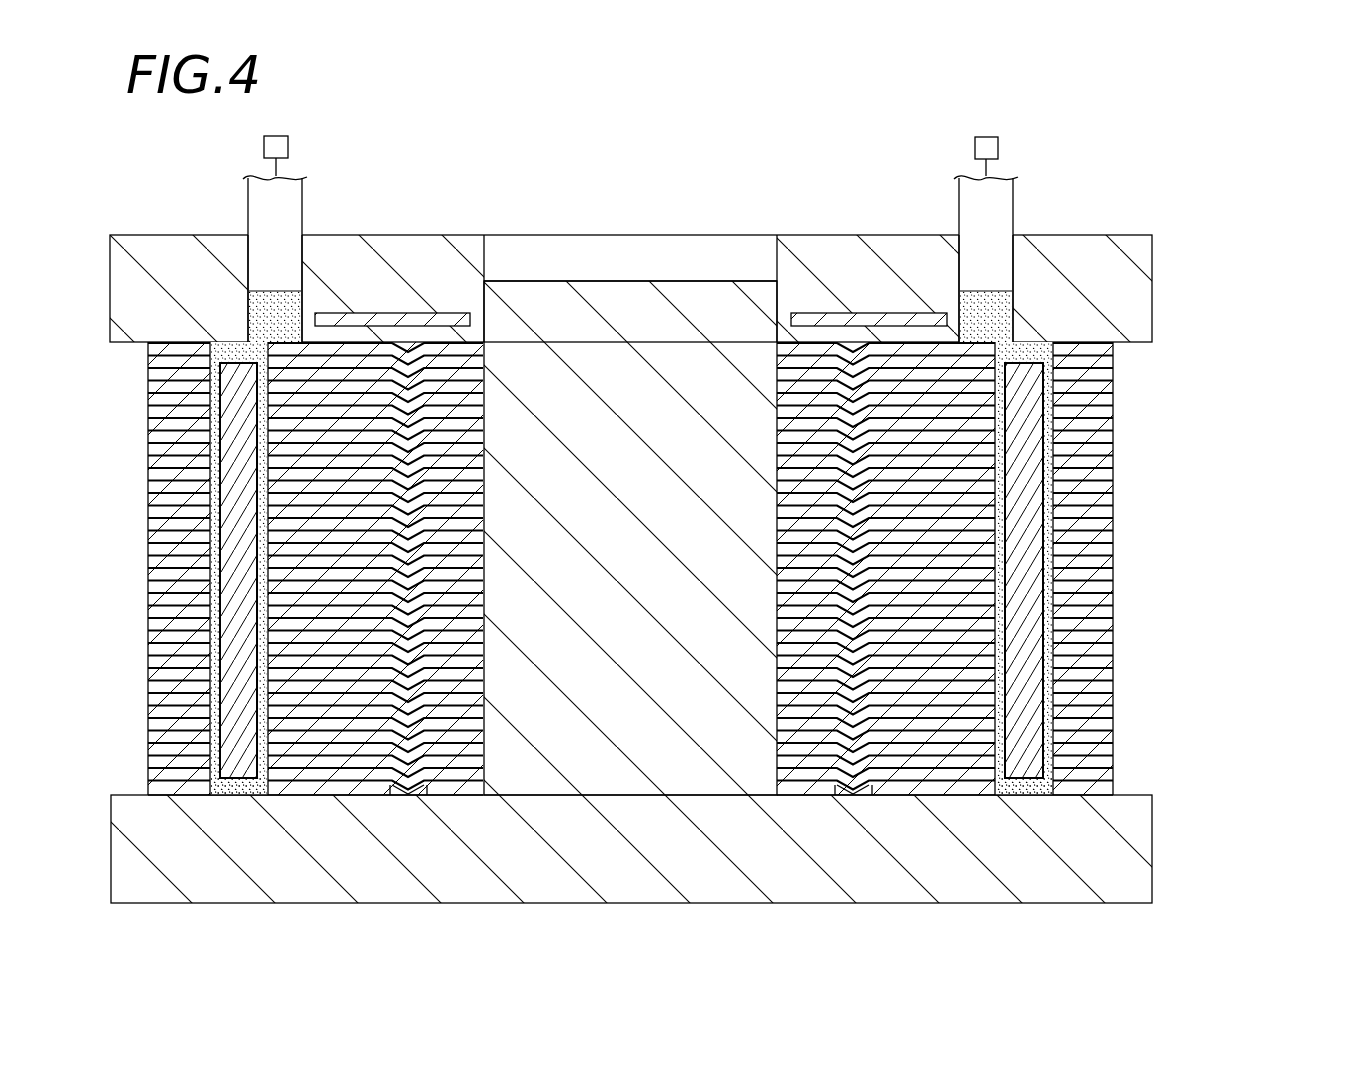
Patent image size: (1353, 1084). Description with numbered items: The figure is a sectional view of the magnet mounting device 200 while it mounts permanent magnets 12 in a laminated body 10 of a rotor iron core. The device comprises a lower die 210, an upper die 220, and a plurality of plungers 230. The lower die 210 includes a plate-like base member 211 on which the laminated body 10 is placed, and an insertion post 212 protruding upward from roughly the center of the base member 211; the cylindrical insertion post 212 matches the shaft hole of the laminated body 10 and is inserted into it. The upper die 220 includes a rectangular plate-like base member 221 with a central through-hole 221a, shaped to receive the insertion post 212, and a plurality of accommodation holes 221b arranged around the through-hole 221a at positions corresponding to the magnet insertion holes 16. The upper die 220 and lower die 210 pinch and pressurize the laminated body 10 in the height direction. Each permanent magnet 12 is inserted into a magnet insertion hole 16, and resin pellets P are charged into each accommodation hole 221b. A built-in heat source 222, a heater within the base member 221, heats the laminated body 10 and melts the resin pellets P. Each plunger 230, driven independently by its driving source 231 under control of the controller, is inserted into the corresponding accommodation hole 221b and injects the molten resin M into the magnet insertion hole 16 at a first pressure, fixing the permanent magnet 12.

The magnet mounting device 200 is at (727, 533).
The upper die 220 is at (683, 227).
The base member 221 is at (1130, 258).
The through-hole 221a is at (487, 263).
The accommodation hole 221b is at (262, 290).
The built-in heat source 222 is at (424, 314).
The plunger 230 is at (673, 227).
The driving source 231 is at (289, 141).
The resin pellet P is at (285, 303).
The lower die 210 is at (688, 566).
The base member 211 is at (1118, 882).
The insertion post 212 is at (652, 293).
The laminated body 10 is at (643, 556).
The permanent magnet 12 is at (220, 410).
The magnet insertion hole 16 is at (214, 350).
The molten resin M is at (212, 790).